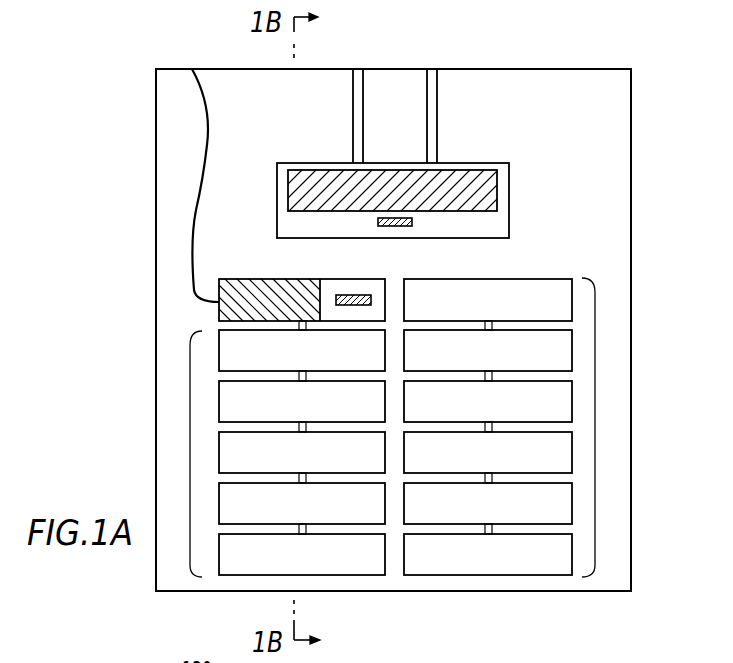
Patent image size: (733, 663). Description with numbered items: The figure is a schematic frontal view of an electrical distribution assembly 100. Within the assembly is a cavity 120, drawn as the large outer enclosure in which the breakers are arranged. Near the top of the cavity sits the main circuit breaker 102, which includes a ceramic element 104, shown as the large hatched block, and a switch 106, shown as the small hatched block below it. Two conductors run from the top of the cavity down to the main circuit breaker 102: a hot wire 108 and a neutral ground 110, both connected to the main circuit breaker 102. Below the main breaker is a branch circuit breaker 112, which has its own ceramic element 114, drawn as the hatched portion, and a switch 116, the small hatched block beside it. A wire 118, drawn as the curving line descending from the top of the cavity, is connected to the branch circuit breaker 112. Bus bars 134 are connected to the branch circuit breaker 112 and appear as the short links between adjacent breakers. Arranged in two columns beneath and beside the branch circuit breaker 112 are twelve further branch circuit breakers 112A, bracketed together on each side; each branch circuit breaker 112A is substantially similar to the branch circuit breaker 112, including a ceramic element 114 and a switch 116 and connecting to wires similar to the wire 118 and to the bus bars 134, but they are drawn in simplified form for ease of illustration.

The electrical distribution assembly 100 is at (128, 57).
The main circuit breaker 102 is at (277, 198).
The ceramic element 104 is at (320, 180).
The switch 106 is at (393, 227).
The hot wire 108 is at (353, 113).
The neutral ground 110 is at (437, 117).
The branch circuit breaker 112 is at (277, 279).
The branch circuit breakers 112A is at (190, 455).
The ceramic element 114 is at (250, 292).
The switch 116 is at (360, 294).
The wire 118 is at (207, 145).
The cavity 120 is at (575, 82).
The bus bars 134 is at (299, 325).